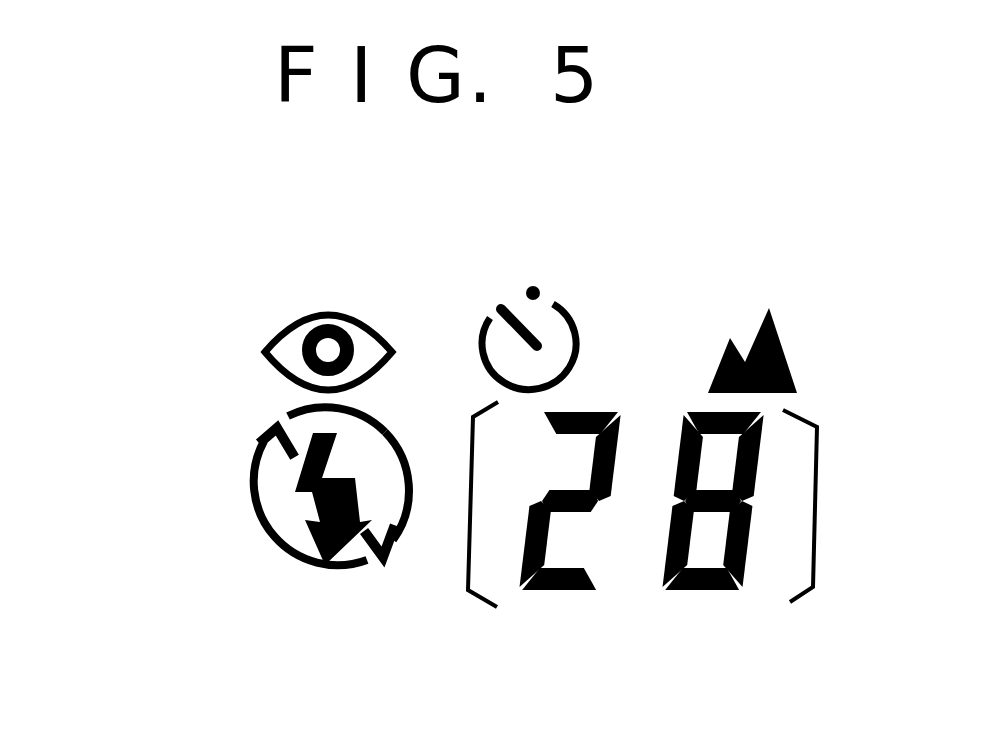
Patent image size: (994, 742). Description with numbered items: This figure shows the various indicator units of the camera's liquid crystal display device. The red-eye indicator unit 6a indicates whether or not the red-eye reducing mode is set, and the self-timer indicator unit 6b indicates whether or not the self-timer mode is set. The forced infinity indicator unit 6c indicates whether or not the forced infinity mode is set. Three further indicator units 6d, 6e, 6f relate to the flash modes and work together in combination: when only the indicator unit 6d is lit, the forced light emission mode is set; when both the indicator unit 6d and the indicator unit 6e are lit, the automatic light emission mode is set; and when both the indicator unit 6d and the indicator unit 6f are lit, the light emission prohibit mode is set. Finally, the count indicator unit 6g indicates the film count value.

The red-eye indicator unit 6a is at (330, 308).
The self-timer indicator unit 6b is at (575, 318).
The forced infinity indicator unit 6c is at (780, 333).
The indicator unit 6d is at (340, 543).
The indicator unit 6e is at (123, 468).
The indicator unit 6f is at (243, 533).
The count indicator unit 6g is at (658, 602).